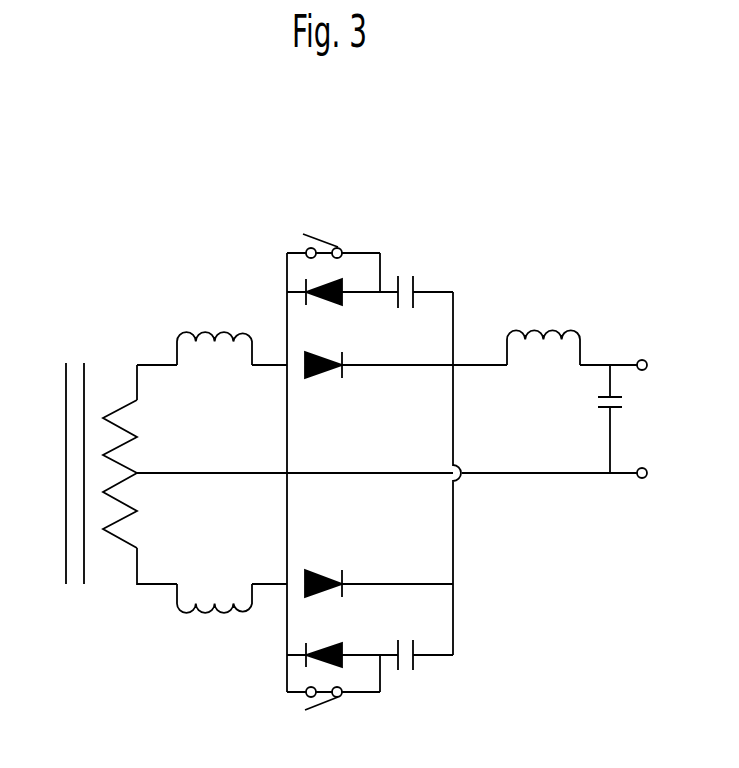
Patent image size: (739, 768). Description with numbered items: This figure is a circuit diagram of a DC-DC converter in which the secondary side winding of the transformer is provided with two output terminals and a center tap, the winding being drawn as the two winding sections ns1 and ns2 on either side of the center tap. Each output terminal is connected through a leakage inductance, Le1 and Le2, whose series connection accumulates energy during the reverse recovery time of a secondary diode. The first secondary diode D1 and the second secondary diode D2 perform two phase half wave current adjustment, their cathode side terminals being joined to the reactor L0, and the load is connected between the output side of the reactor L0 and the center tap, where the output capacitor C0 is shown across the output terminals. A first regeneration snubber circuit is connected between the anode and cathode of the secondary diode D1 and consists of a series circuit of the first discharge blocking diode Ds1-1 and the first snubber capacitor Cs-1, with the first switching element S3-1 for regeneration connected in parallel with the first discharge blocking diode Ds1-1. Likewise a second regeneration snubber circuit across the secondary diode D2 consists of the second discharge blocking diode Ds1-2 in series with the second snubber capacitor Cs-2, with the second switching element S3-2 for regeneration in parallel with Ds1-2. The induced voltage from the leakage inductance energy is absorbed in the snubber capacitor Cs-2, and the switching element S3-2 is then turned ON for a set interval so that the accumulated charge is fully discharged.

The first secondary winding ns1 is at (141, 436).
The second secondary winding ns2 is at (142, 510).
The leakage inductance Le1 is at (214, 331).
The leakage inductance Le2 is at (214, 615).
The first switching element for regeneration S3-1 is at (333, 228).
The second switching element for regeneration S3-2 is at (333, 718).
The first discharge blocking diode Ds1-1 is at (343, 307).
The second discharge blocking diode Ds1-2 is at (335, 639).
The first snubber capacitor Cs-1 is at (426, 276).
The second snubber capacitor Cs-2 is at (435, 673).
The first secondary diode D1 is at (336, 383).
The second secondary diode D2 is at (342, 570).
The reactor L0 is at (543, 327).
The output capacitor C0 is at (625, 419).